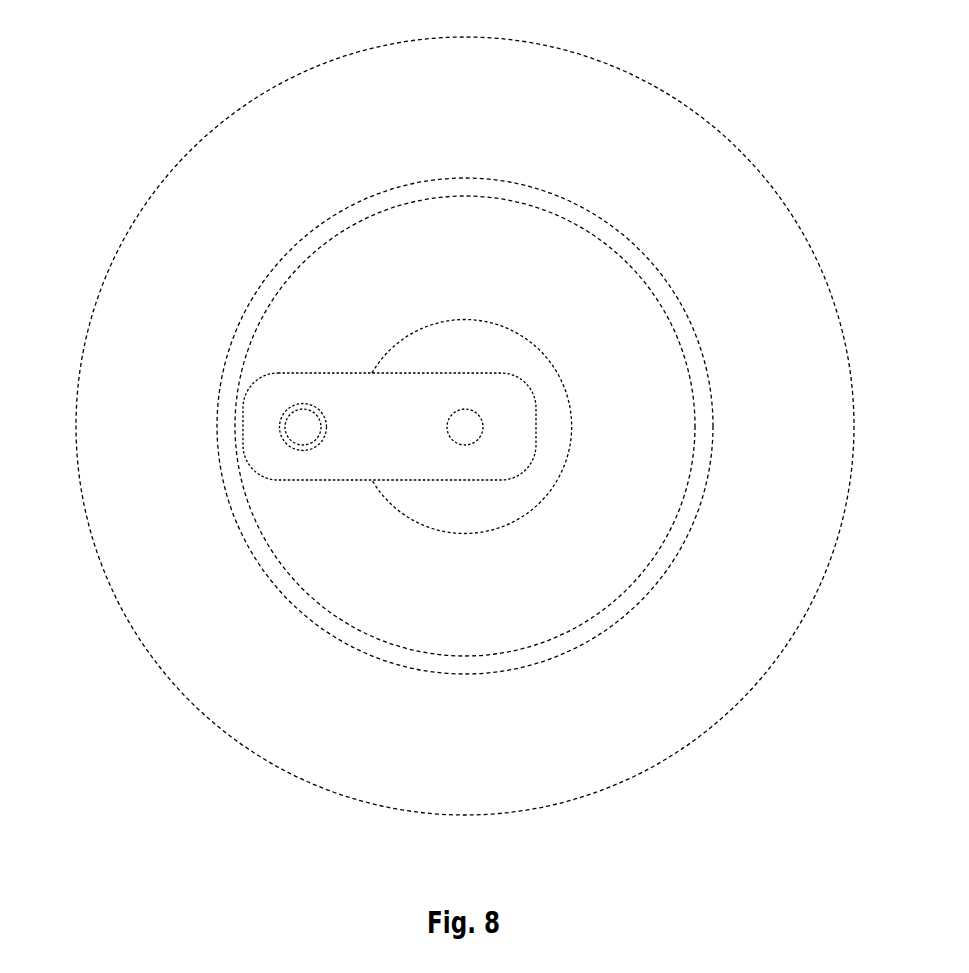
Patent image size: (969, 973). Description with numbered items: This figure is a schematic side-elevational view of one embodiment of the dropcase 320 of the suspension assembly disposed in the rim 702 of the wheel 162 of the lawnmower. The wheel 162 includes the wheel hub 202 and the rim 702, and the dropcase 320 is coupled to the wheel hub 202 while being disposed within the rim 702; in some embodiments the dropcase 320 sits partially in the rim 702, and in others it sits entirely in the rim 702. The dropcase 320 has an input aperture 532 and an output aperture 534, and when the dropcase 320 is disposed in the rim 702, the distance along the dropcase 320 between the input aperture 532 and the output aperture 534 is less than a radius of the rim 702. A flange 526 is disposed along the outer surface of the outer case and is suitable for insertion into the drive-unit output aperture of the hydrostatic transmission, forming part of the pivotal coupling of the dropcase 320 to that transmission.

The wheel 162 is at (740, 87).
The rim 702 is at (655, 572).
The wheel hub 202 is at (500, 497).
The dropcase 320 is at (348, 463).
The output aperture 534 is at (455, 428).
The flange 526 is at (283, 410).
The input aperture 532 is at (303, 427).